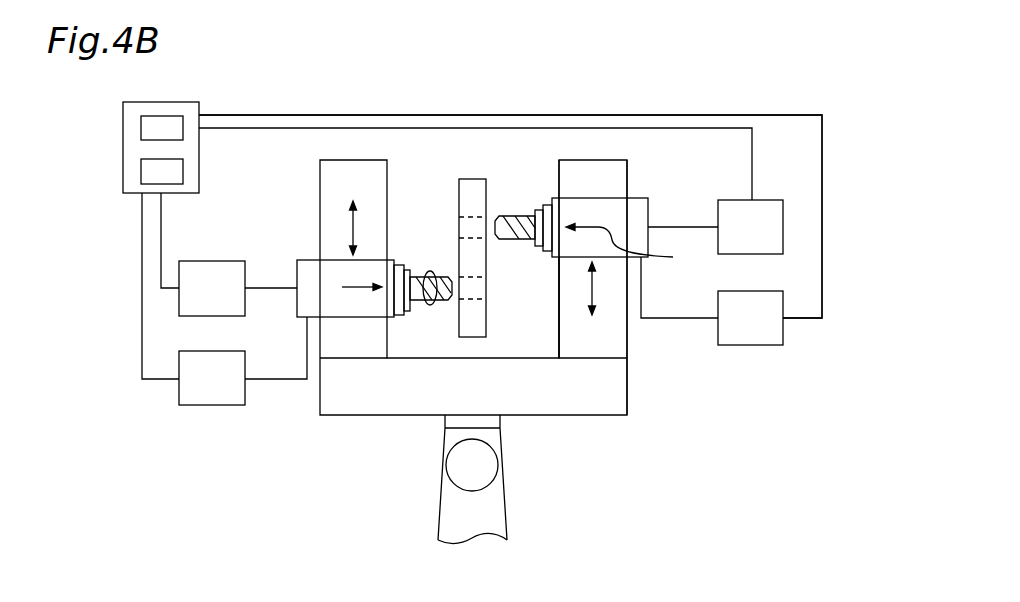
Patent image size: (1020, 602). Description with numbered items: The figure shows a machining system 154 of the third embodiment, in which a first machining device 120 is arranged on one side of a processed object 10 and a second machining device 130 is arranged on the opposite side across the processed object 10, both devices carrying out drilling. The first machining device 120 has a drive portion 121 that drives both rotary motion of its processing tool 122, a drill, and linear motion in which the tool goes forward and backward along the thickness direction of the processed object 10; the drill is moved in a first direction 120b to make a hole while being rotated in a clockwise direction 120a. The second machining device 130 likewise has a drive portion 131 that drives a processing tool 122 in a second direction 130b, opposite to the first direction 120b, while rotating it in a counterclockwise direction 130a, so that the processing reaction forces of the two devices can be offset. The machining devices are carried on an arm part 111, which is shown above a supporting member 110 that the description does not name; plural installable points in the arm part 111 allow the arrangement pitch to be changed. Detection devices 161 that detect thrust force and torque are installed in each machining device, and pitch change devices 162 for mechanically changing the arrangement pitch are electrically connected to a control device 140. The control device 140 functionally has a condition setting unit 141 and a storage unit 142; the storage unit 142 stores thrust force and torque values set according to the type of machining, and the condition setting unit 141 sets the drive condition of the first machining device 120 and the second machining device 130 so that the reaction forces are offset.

The processed object 10 is at (467, 173).
The spindle 110 is at (522, 490).
The arm part 111 is at (553, 398).
The first machining device 120 is at (614, 274).
The clockwise direction 120a is at (525, 307).
The first direction 120b is at (635, 254).
The drive portion 121 is at (637, 210).
The processing tool 122 is at (518, 267).
The second machining device 130 is at (326, 334).
The counterclockwise direction 130a is at (427, 271).
The second direction 130b is at (360, 292).
The drive portion 131 is at (305, 270).
The control device 140 is at (118, 147).
The condition setting unit 141 is at (140, 125).
The storage unit 142 is at (140, 173).
The machining system 154 is at (780, 375).
The detection devices 161 is at (206, 261).
The pitch change devices 162 is at (206, 351).